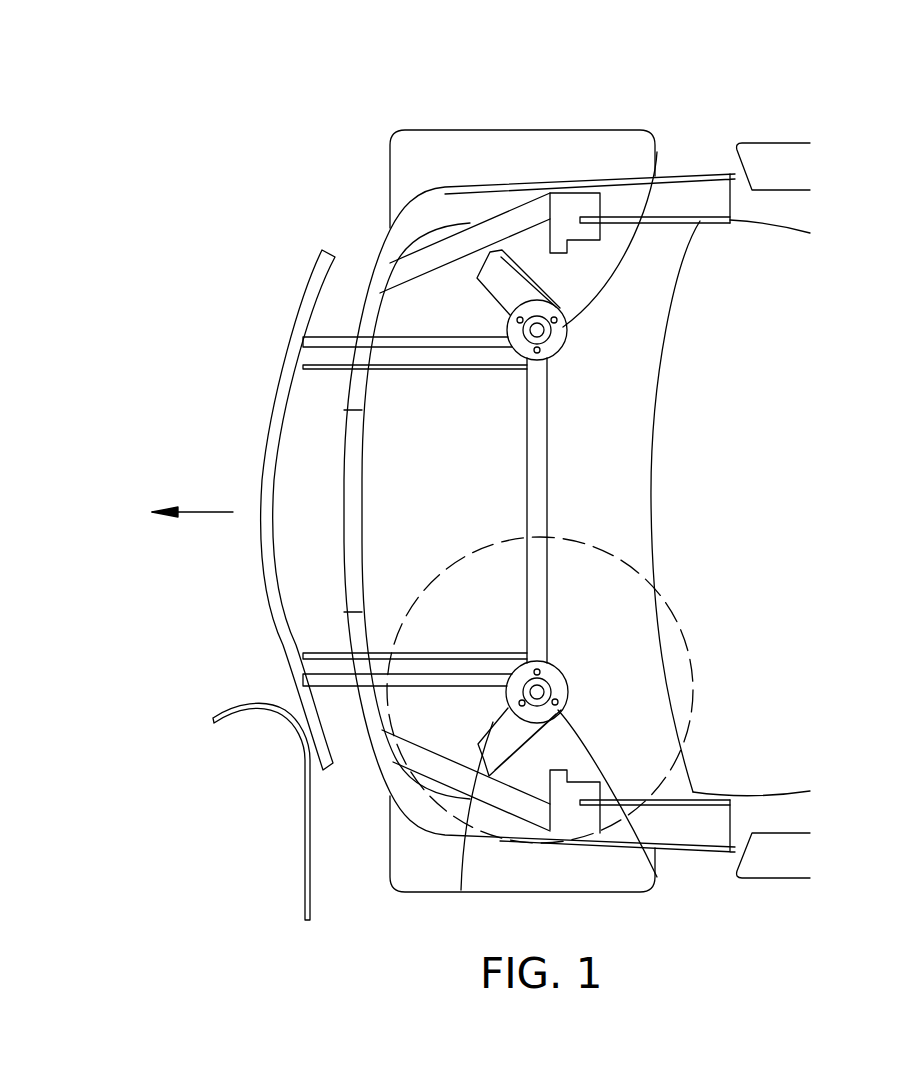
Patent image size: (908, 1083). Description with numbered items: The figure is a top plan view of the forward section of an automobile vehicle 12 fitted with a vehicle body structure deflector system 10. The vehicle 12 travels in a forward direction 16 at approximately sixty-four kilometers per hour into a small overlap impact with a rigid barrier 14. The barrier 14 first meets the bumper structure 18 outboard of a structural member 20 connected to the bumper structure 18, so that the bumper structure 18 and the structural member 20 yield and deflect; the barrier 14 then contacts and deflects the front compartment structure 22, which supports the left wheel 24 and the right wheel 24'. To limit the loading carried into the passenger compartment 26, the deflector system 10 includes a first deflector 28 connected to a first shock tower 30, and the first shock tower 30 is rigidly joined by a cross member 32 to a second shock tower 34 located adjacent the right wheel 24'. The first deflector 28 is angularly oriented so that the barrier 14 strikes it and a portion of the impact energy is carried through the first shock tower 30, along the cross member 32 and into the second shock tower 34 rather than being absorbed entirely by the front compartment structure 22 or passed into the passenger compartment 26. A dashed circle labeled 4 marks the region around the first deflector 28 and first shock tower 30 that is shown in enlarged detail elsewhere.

The detail view region (FIG. 4) 4 is at (690, 578).
The vehicle body structure deflector system 10 is at (829, 124).
The automobile vehicle 12 is at (752, 382).
The rigid barrier 14 is at (287, 722).
The forward direction 16 is at (190, 512).
The bumper structure 18 is at (265, 596).
The structural member 20 is at (310, 664).
The front compartment structure 22 is at (387, 772).
The left wheel 24 is at (501, 855).
The right wheel 24' is at (489, 179).
The passenger compartment 26 is at (692, 788).
The first deflector 28 is at (461, 890).
The first shock tower 30 is at (657, 877).
The cross member 32 is at (537, 638).
The second shock tower 34 is at (657, 152).